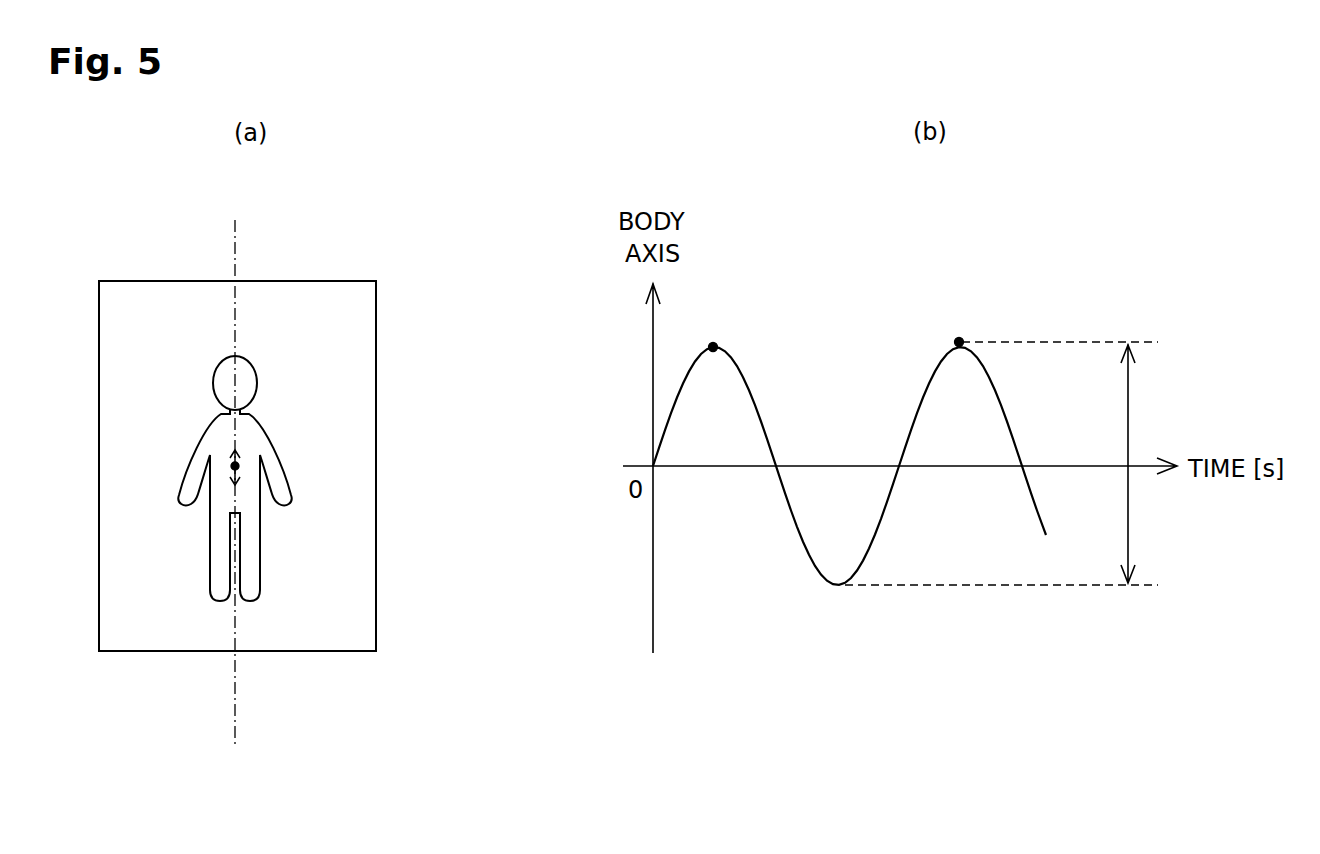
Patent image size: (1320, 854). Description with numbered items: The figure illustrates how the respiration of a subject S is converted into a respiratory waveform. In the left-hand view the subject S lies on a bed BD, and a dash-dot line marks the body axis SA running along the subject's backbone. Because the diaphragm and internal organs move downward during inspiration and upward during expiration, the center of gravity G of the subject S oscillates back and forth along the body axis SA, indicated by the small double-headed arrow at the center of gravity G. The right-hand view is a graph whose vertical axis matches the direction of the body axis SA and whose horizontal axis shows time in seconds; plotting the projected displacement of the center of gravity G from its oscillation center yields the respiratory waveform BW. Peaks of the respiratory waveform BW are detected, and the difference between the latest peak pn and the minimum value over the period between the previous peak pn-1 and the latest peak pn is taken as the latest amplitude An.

The bed BD is at (289, 281).
The subject S is at (268, 430).
The center of gravity G is at (239, 466).
The body axis SA is at (237, 717).
The respiratory waveform BW is at (748, 388).
The previous peak pn-1 is at (710, 327).
The latest peak pn is at (962, 324).
The latest amplitude An is at (1129, 528).